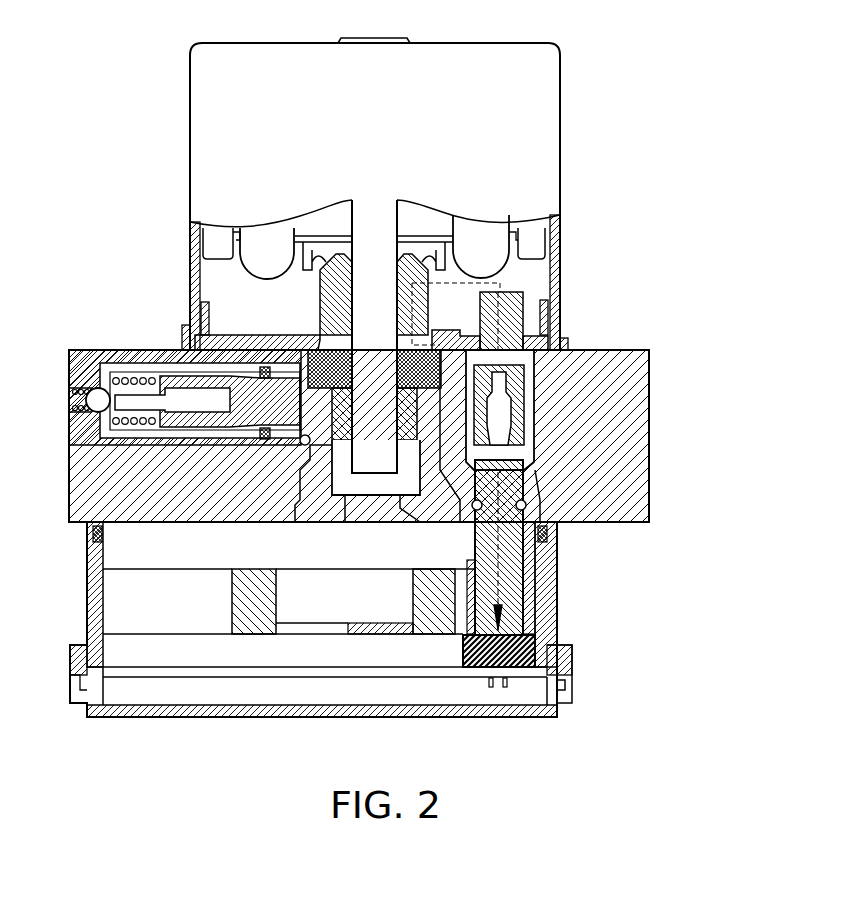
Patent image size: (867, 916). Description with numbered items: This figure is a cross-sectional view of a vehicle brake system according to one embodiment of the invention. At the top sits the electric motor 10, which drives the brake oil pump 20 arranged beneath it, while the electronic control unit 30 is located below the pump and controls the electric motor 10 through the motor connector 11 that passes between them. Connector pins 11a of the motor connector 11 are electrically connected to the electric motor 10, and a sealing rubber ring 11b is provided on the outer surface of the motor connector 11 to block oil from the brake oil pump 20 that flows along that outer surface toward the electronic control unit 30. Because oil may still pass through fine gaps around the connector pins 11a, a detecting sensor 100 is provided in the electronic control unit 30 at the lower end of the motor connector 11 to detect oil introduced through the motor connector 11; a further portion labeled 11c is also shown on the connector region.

The electric motor 10 is at (560, 173).
The brake oil pump 20 is at (650, 415).
The motor connector 11 is at (611, 492).
The connector pins 11a is at (513, 453).
The sealing rubber ring 11b is at (524, 507).
The injector lower body 11c is at (524, 487).
The electronic control unit 30 is at (558, 588).
The detecting sensor 100 is at (535, 655).